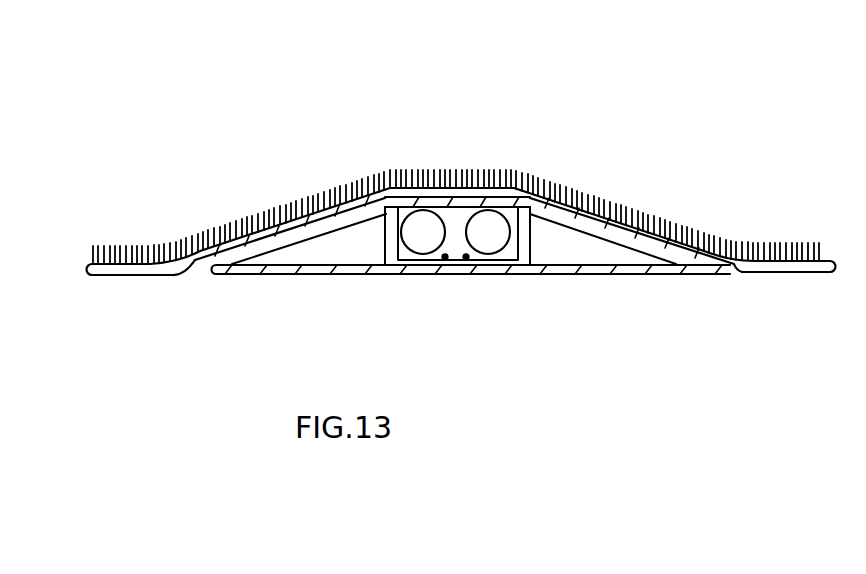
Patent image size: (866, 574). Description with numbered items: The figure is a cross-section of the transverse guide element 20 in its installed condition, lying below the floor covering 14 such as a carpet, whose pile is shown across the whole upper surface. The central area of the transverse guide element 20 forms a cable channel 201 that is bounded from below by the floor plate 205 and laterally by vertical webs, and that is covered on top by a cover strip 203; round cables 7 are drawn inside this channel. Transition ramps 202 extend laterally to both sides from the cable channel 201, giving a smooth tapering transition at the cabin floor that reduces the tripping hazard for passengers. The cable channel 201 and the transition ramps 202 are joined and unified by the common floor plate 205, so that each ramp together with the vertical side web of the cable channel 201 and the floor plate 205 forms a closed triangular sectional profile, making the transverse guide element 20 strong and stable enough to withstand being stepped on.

The electrical conductors 7 is at (429, 244).
The floor covering 14 is at (753, 268).
The transverse guide element 20 is at (212, 276).
The cable channel 201 is at (528, 262).
The transition ramps 202 is at (283, 229).
The cover strip 203 is at (505, 192).
The floor plate 205 is at (654, 268).